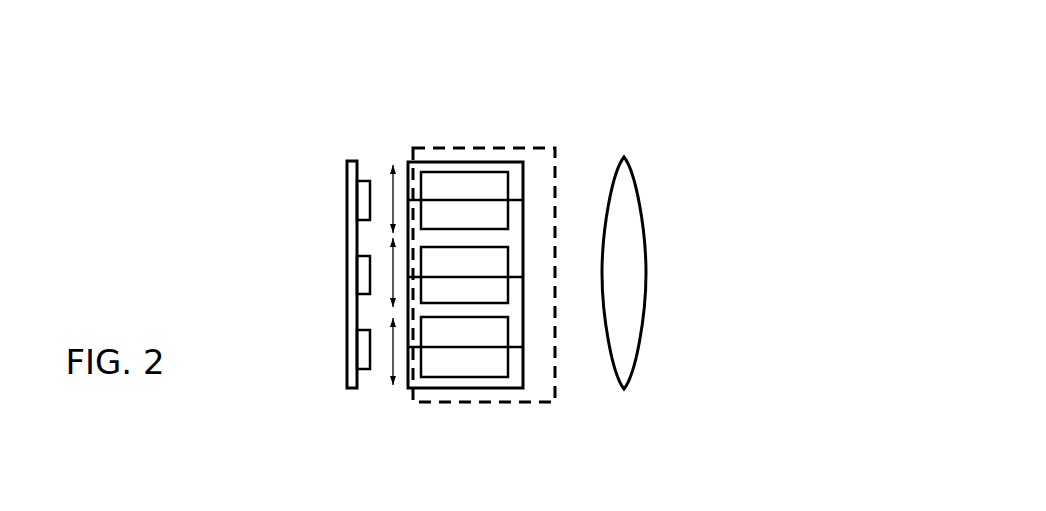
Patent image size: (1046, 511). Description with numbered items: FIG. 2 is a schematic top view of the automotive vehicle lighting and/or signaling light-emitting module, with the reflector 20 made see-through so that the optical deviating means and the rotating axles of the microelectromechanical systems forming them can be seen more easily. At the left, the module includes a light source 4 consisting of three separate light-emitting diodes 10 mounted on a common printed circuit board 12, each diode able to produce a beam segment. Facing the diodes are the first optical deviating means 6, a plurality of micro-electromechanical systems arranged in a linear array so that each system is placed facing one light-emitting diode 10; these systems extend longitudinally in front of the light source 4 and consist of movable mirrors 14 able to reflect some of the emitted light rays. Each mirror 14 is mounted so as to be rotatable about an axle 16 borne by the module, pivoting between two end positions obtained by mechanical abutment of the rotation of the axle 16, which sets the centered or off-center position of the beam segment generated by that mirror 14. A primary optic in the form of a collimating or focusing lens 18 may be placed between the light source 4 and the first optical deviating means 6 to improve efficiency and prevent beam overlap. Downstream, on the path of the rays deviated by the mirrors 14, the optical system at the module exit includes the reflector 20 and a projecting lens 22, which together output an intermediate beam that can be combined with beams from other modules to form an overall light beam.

The light source 4 is at (296, 313).
The first optical deviating means 6 is at (552, 271).
The light-emitting diode 10 is at (364, 198).
The printed circuit board 12 is at (348, 323).
The movable mirror 14 is at (443, 365).
The axle 16 is at (512, 198).
The collimating or focusing lens 18 is at (392, 166).
The reflector 20 is at (556, 198).
The projecting lens 22 is at (660, 262).